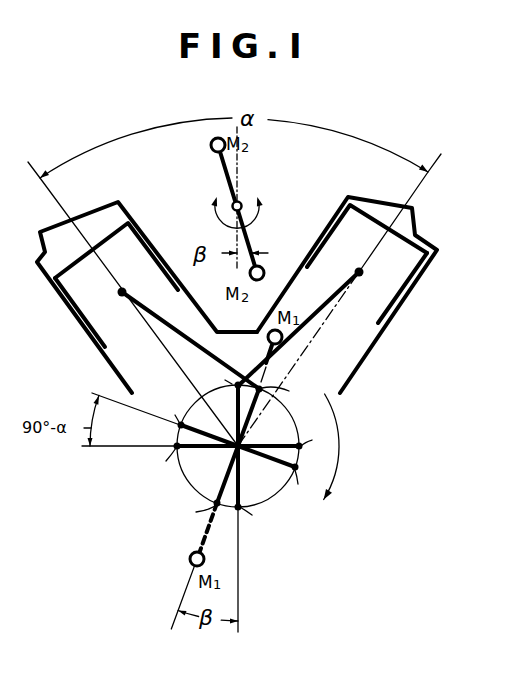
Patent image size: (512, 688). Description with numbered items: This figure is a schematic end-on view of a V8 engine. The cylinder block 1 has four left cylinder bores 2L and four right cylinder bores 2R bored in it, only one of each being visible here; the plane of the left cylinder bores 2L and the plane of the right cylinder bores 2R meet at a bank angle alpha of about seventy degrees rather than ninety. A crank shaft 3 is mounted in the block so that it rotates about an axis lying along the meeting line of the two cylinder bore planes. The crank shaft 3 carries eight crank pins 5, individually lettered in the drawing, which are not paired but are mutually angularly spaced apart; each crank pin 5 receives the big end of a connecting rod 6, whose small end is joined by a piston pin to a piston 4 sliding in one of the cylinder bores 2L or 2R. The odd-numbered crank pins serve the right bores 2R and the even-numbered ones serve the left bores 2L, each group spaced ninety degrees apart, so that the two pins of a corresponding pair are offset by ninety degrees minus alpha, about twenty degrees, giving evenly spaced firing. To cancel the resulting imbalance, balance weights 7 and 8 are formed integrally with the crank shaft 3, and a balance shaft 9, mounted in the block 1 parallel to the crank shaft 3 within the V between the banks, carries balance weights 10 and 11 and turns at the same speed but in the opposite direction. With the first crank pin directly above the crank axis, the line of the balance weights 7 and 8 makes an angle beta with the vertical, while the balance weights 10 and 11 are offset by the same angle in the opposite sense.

The cylinder block 1 is at (365, 357).
The left cylinder bores 2L is at (86, 313).
The right cylinder bores 2R is at (386, 308).
The crank shaft 3 is at (238, 446).
The piston 4 is at (158, 255).
The crank pins 5 is at (252, 378).
The connecting rod 6 is at (176, 330).
The balance weight 7 is at (190, 558).
The balance weight 8 is at (268, 332).
The balance shaft 9 is at (239, 202).
The balance weight 10 is at (264, 271).
The balance weight 11 is at (211, 144).